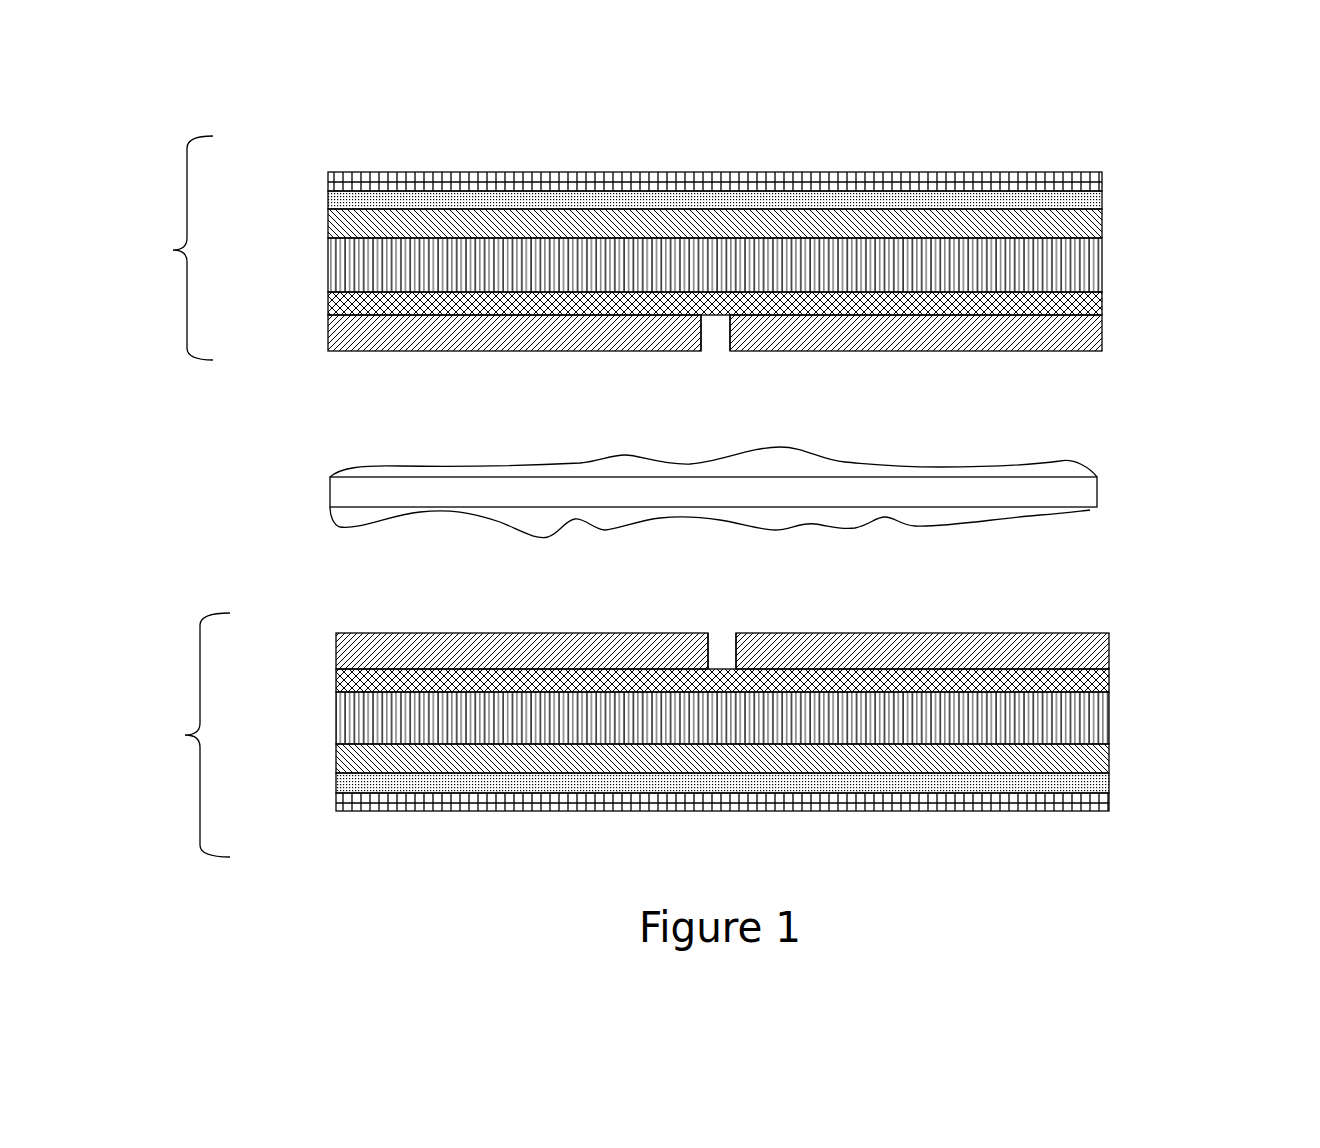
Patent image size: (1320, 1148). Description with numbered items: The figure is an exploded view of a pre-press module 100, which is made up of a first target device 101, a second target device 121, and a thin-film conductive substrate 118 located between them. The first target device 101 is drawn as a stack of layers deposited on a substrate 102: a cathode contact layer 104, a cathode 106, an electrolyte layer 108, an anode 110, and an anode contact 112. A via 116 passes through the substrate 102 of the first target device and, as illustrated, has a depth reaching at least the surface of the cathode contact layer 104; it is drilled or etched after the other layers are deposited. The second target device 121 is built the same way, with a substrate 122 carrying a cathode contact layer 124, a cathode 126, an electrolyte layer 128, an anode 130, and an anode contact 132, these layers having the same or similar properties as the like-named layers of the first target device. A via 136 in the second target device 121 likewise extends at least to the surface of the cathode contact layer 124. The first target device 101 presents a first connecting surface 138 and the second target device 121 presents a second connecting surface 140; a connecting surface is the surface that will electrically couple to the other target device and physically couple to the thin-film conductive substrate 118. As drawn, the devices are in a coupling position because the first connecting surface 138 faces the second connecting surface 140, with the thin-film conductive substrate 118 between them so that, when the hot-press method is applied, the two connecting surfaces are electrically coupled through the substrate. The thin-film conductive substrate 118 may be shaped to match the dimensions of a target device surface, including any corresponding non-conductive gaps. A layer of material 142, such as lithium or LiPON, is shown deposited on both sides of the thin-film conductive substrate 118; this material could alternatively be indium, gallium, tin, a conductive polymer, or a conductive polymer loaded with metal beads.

The pre-press module 100 is at (1230, 130).
The first target device 101 is at (159, 248).
The substrate 102 is at (531, 343).
The cathode contact layer 104 is at (1102, 303).
The cathode 106 is at (1102, 262).
The electrolyte layer 108 is at (328, 228).
The anode 110 is at (1102, 200).
The anode contact 112 is at (328, 181).
The via 116 is at (715, 330).
The thin-film conductive substrate 118 is at (330, 490).
The second target device 121 is at (175, 735).
The substrate 122 is at (537, 663).
The cathode contact layer 124 is at (1109, 680).
The cathode 126 is at (1109, 716).
The electrolyte layer 128 is at (336, 757).
The anode 130 is at (1109, 780).
The anode contact 132 is at (336, 803).
The via 136 is at (721, 638).
The first connecting surface 138 is at (495, 388).
The second connecting surface 140 is at (508, 602).
The layer of material 142 is at (1080, 470).